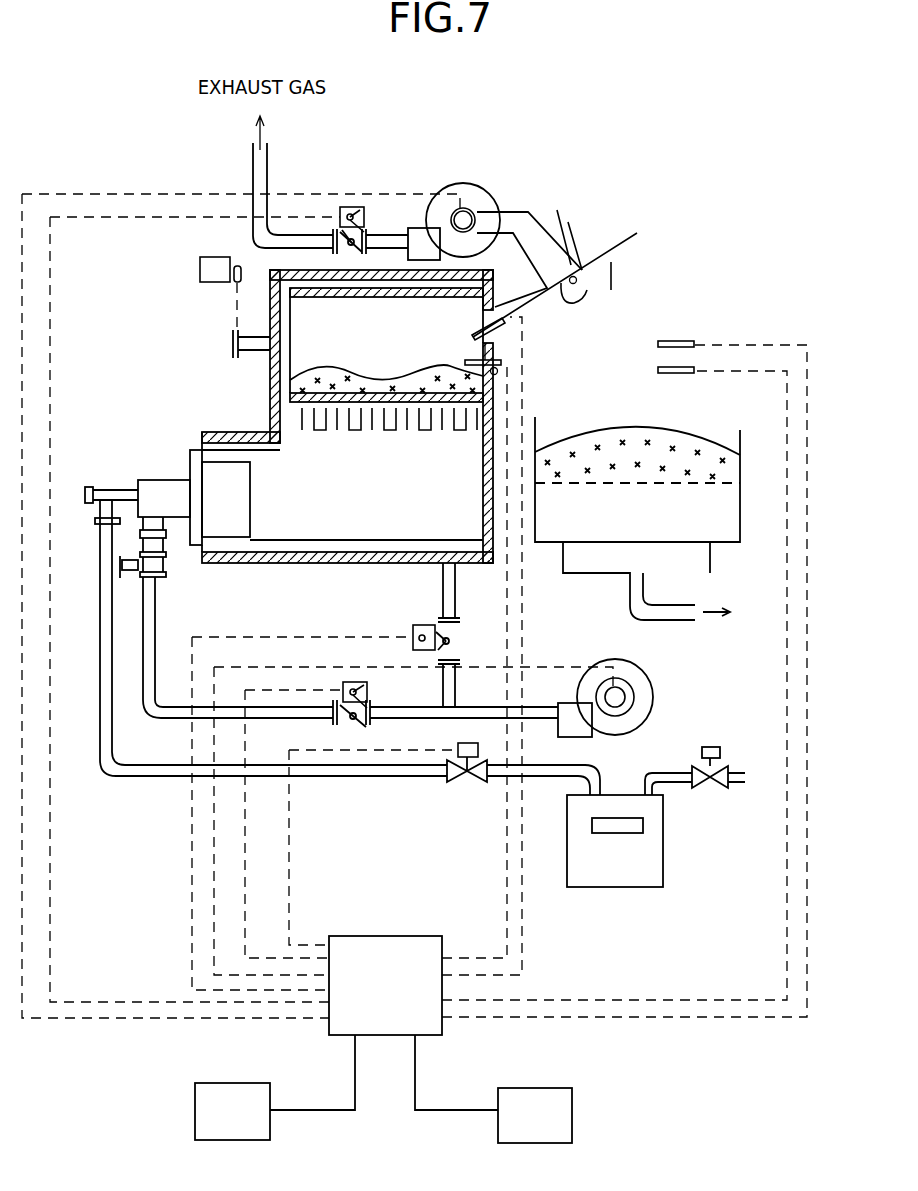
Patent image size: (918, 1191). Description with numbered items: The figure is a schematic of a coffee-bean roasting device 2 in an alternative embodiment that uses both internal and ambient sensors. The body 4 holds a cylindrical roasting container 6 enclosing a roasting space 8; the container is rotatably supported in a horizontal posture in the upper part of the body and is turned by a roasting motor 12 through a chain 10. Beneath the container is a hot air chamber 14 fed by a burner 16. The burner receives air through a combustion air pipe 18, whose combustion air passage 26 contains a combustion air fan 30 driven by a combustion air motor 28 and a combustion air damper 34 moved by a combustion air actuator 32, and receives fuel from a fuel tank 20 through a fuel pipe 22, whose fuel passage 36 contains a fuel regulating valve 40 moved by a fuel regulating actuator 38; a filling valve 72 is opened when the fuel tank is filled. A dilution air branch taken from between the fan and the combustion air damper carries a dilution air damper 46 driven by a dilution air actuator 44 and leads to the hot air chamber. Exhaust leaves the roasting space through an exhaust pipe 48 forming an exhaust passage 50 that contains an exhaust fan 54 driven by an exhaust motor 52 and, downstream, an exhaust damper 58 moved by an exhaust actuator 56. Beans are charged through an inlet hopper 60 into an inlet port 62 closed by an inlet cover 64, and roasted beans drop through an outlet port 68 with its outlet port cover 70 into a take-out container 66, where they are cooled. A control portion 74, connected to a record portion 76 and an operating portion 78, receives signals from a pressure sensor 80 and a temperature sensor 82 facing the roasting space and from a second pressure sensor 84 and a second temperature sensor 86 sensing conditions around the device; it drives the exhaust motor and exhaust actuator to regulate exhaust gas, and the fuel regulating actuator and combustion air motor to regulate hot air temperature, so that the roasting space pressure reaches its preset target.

The roasting device 2 is at (607, 133).
The body 4 is at (250, 565).
The roasting container 6 is at (274, 412).
The roasting space 8 is at (317, 308).
The chain 10 is at (237, 311).
The roasting motor 12 is at (200, 270).
The hot air chamber 14 is at (373, 527).
The burner 16 is at (175, 476).
The combustion air pipe 18 is at (147, 726).
The fuel tank 20 is at (660, 860).
The fuel pipe 22 is at (153, 790).
The combustion air passage 26 is at (153, 613).
The combustion air motor 28 is at (630, 698).
The combustion air fan 30 is at (650, 672).
The combustion air actuator 32 is at (345, 682).
The combustion air damper 34 is at (350, 725).
The fuel passage 36 is at (395, 780).
The fuel regulating actuator 38 is at (480, 750).
The fuel regulating valve 40 is at (455, 785).
The dilution air actuator 44 is at (415, 628).
The dilution air damper 46 is at (447, 640).
The exhaust pipe 48 is at (542, 210).
The exhaust passage 50 is at (537, 248).
The exhaust motor 52 is at (480, 200).
The exhaust fan 54 is at (453, 183).
The exhaust actuator 56 is at (343, 205).
The exhaust damper 58 is at (370, 258).
The inlet hopper 60 is at (650, 241).
The inlet port 62 is at (567, 300).
The inlet cover 64 is at (585, 285).
The take-out container 66 is at (740, 552).
The outlet port 68 is at (486, 398).
The outlet port cover 70 is at (507, 380).
The filling valve 72 is at (712, 786).
The control portion 74 is at (392, 948).
The record portion 76 is at (200, 1110).
The operating portion 78 is at (570, 1108).
The pressure sensor 80 is at (525, 318).
The temperature sensor 82 is at (500, 361).
The pressure sensor 84 is at (690, 374).
The temperature sensor 86 is at (690, 340).